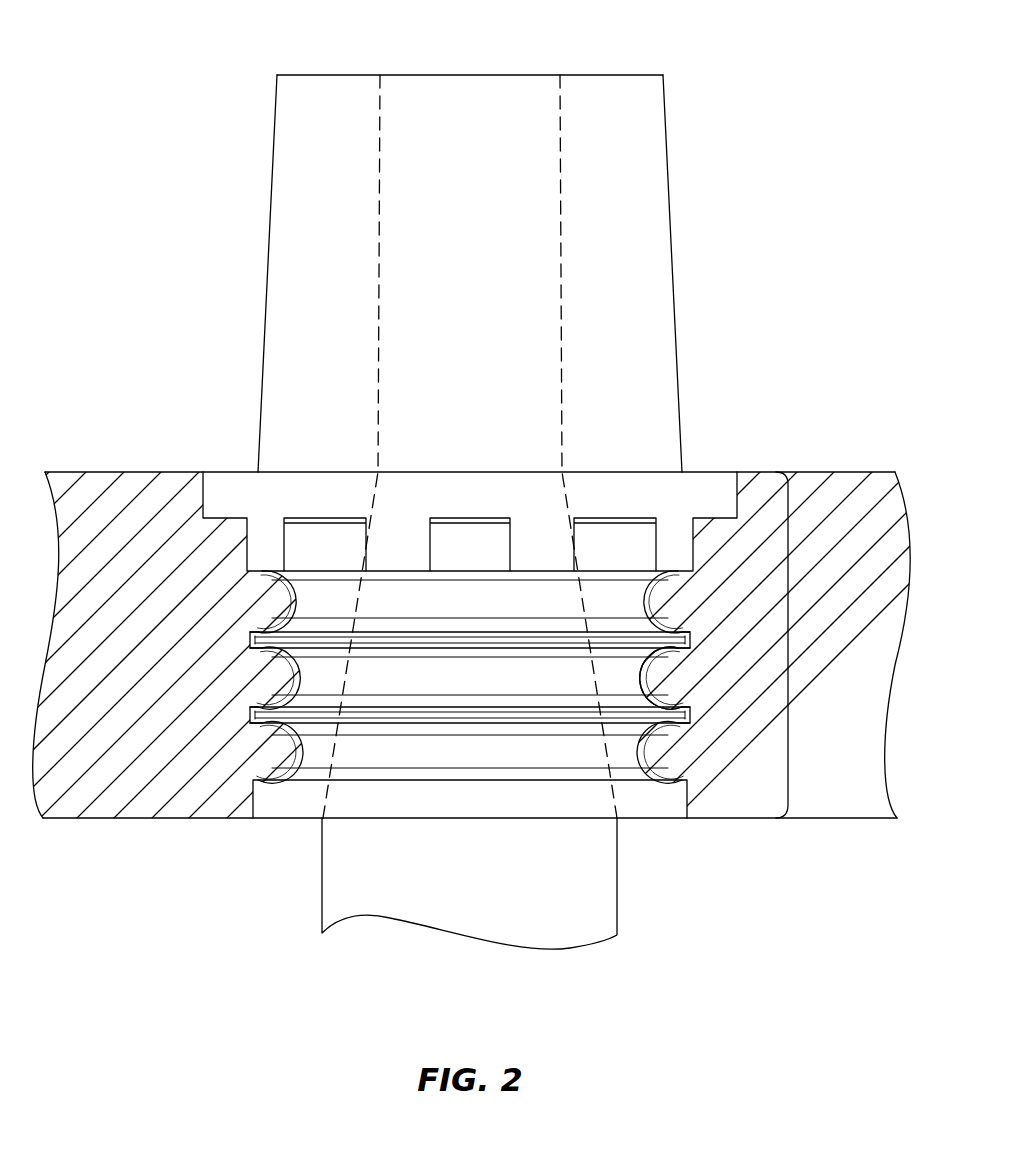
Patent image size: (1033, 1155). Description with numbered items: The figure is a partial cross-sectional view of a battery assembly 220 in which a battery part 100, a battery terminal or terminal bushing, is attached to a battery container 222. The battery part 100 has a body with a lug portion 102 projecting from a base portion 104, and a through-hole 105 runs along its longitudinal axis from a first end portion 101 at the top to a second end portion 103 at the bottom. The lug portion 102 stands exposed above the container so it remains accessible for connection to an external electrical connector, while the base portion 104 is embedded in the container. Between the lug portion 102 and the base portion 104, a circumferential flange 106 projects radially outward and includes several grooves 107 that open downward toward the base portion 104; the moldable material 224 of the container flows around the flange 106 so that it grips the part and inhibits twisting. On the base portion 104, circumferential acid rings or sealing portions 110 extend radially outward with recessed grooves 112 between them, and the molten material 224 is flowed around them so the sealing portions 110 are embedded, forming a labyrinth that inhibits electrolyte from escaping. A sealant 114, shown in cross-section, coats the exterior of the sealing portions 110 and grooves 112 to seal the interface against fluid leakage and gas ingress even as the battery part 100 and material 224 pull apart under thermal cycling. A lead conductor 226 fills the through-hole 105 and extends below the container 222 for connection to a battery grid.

The battery part 100 is at (686, 243).
The first end portion 101 is at (606, 84).
The lug portion 102 is at (750, 75).
The second end portion 103 is at (258, 797).
The base portion 104 is at (790, 650).
The through-hole 105 is at (473, 67).
The circumferential flange 106 is at (222, 492).
The grooves 107 is at (321, 545).
The sealing portions 110 is at (250, 641).
The grooves 112 is at (262, 607).
The sealant 114 is at (665, 673).
The battery assembly 220 is at (150, 234).
The battery container 222 is at (818, 472).
The moldable material 224 is at (857, 738).
The conductor 226 is at (600, 878).